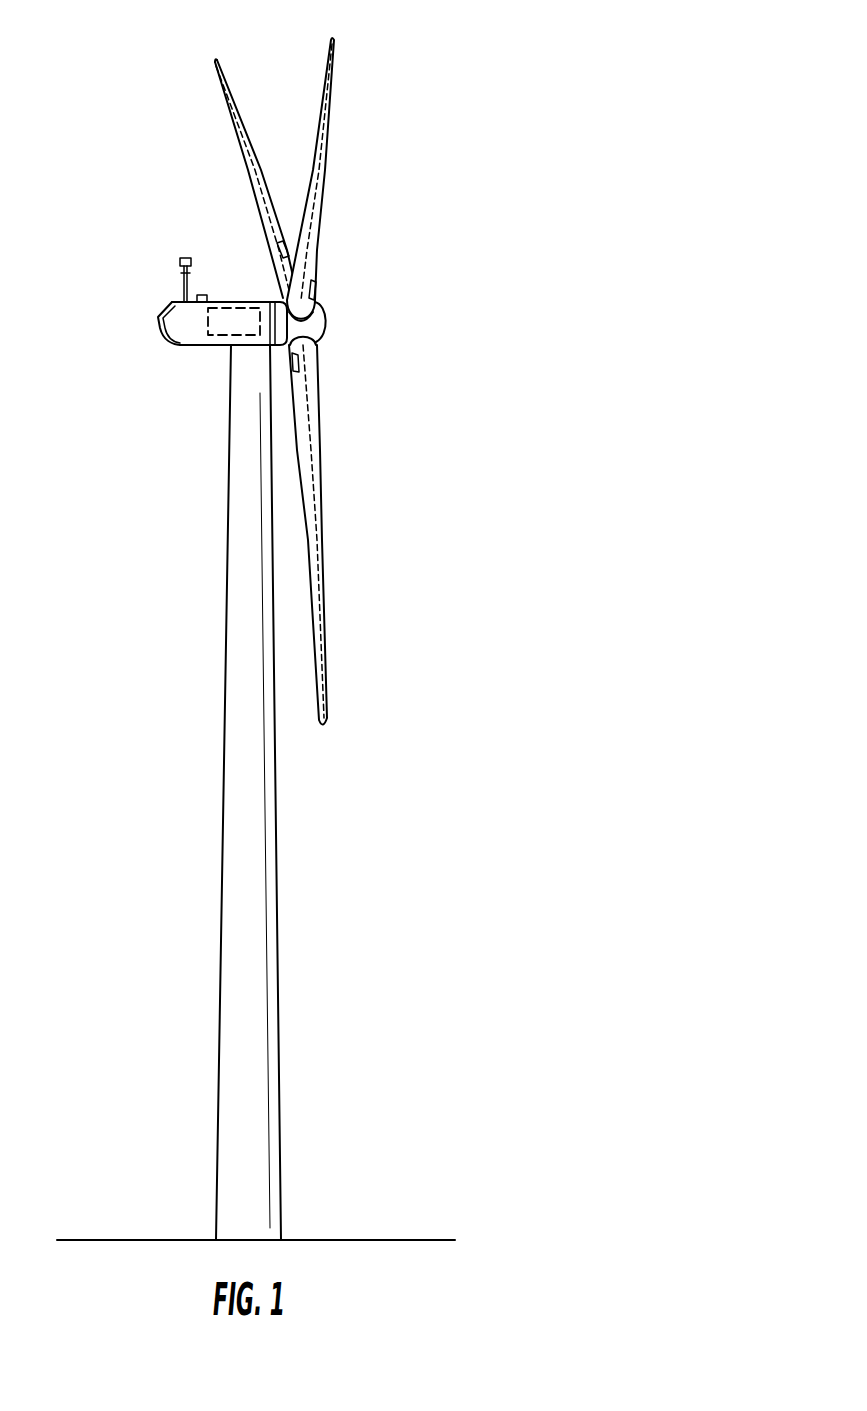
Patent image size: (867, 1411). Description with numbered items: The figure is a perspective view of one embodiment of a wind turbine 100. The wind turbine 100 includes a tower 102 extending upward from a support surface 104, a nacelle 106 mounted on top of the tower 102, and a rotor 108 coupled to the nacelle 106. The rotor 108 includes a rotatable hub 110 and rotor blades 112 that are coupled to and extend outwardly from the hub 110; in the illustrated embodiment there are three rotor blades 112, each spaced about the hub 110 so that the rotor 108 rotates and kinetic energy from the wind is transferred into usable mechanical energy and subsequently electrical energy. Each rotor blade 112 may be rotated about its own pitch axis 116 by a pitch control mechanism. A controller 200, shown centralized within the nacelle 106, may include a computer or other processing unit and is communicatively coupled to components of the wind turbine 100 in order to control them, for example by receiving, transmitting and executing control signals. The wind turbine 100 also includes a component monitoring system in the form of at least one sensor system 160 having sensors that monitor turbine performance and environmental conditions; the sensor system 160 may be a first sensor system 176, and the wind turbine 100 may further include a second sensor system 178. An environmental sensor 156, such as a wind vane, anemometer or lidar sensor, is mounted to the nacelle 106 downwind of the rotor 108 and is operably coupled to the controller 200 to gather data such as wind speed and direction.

The wind turbine 100 is at (450, 162).
The tower 102 is at (250, 862).
The support surface 104 is at (175, 1240).
The nacelle 106 is at (195, 347).
The rotor 108 is at (396, 299).
The rotatable hub 110 is at (330, 318).
The rotor blade 112 is at (315, 152).
The pitch axis 116 is at (258, 204).
The environmental sensor 156 is at (183, 294).
The sensor system 160 is at (280, 243).
The first sensor system 176 is at (320, 291).
The second sensor system 178 is at (295, 362).
The controller 200 is at (230, 306).